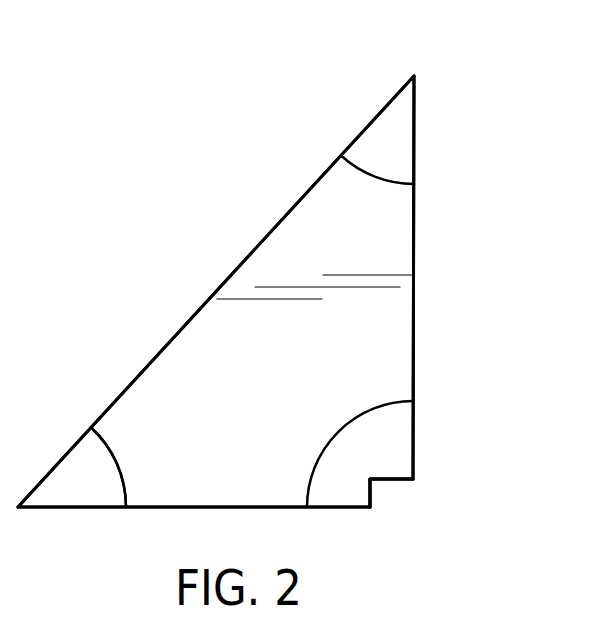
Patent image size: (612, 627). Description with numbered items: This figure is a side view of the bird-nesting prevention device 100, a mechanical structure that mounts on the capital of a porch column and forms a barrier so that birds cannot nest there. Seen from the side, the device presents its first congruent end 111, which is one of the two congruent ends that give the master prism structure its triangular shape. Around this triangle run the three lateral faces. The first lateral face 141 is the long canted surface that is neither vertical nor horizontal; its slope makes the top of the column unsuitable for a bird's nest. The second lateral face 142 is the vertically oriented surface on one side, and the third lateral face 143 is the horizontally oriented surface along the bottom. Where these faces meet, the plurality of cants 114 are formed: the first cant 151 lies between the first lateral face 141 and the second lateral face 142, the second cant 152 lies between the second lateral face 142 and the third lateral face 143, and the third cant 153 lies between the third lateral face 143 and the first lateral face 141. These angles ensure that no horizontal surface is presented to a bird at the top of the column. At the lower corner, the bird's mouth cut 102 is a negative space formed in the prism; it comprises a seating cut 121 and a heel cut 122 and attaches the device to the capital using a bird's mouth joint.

The bird-nesting prevention device 100 is at (118, 176).
The bird's mouth cut 102 is at (392, 495).
The first congruent end 111 is at (391, 267).
The plurality of cants 114 is at (349, 176).
The seating cut 121 is at (390, 479).
The heel cut 122 is at (370, 493).
The first lateral face 141 is at (199, 310).
The second lateral face 142 is at (413, 327).
The third lateral face 143 is at (145, 508).
The first cant 151 is at (374, 182).
The second cant 152 is at (326, 442).
The third cant 153 is at (119, 465).